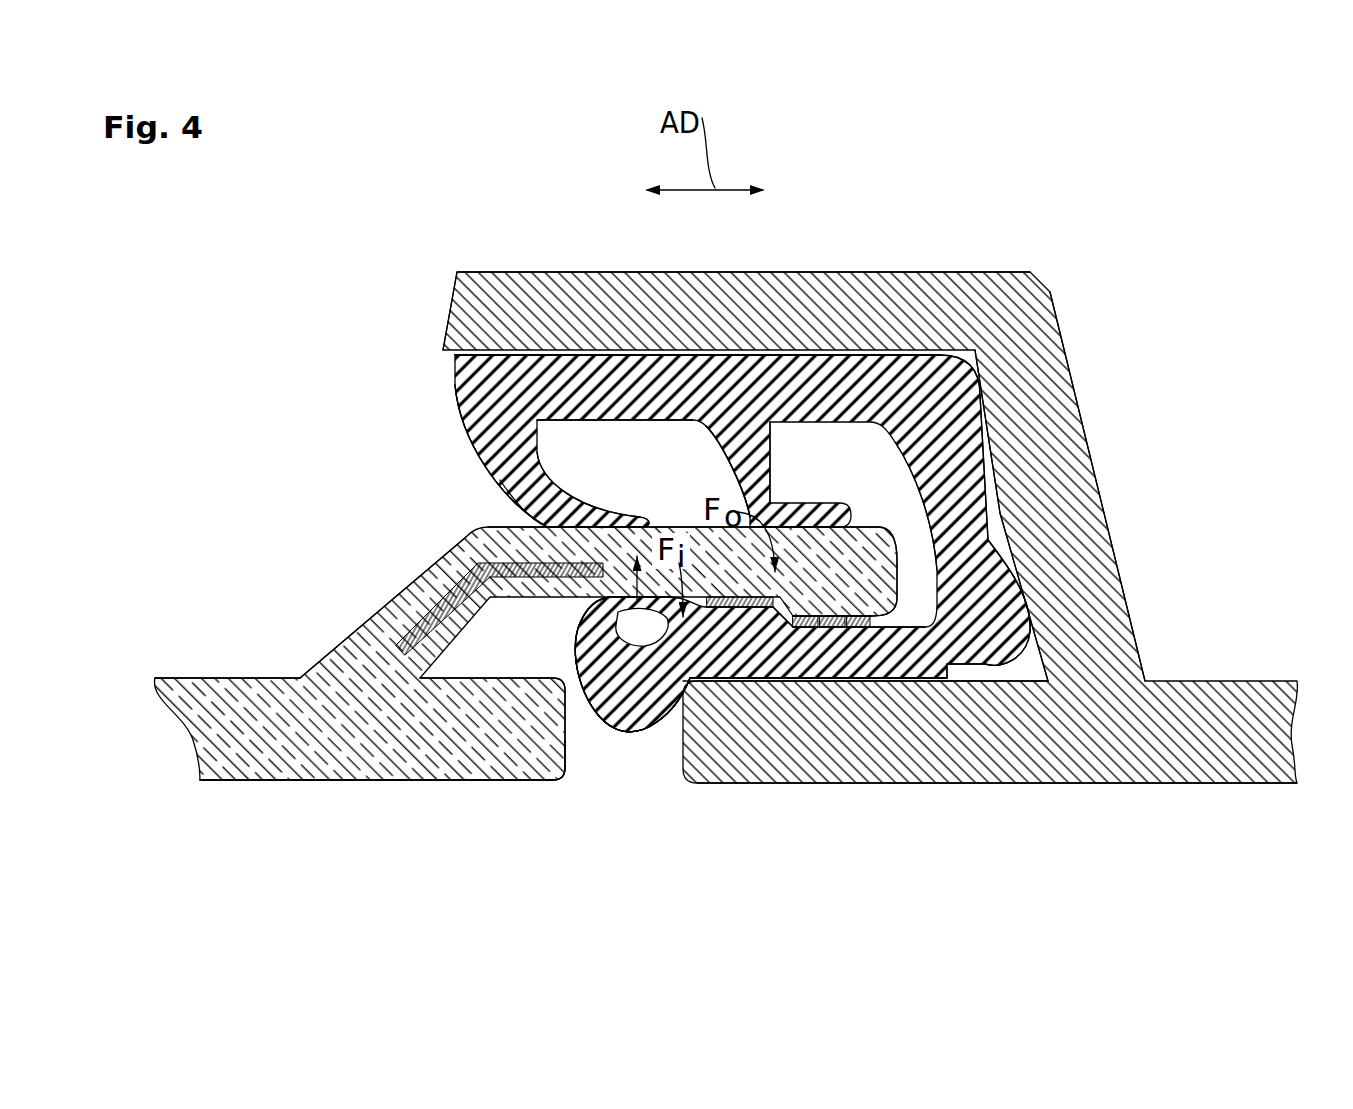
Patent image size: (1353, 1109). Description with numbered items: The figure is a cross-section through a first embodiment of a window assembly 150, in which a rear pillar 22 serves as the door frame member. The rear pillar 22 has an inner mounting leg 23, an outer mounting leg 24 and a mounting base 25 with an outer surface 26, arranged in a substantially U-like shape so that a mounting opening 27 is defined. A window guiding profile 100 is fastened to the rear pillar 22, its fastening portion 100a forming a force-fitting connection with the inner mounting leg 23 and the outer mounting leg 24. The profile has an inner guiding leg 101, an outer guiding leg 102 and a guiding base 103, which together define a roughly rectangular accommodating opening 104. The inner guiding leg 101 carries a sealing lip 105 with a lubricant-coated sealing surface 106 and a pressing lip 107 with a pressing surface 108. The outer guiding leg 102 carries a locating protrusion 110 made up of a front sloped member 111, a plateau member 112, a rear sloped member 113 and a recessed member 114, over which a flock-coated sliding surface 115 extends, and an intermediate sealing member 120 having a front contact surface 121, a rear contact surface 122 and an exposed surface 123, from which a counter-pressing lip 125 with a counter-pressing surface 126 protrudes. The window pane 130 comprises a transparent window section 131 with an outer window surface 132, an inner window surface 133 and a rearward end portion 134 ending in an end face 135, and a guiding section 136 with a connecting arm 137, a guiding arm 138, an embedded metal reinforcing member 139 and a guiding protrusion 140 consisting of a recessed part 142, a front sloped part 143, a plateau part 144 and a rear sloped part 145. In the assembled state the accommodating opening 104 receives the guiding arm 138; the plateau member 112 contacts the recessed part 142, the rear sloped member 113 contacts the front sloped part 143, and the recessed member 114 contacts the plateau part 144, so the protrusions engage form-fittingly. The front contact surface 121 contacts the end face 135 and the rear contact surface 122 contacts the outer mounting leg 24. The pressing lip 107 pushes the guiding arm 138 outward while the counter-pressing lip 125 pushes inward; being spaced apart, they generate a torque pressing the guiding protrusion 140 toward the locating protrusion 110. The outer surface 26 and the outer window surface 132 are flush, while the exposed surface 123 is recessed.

The rear pillar 22 is at (1177, 500).
The inner mounting leg 23 is at (942, 305).
The outer mounting leg 24 is at (1020, 784).
The mounting base 25 is at (1055, 383).
The outer surface 26 is at (1135, 784).
The mounting opening 27 is at (968, 365).
The window guiding profile 100 is at (470, 397).
The fastening portion 100a is at (790, 352).
The inner guiding leg 101 is at (625, 395).
The outer guiding leg 102 is at (843, 657).
The guiding base 103 is at (993, 505).
The accommodating opening 104 is at (440, 497).
The sealing lip 105 is at (494, 457).
The sealing surface 106 is at (500, 498).
The pressing lip 107 is at (742, 462).
The pressing surface 108 is at (750, 492).
The locating protrusion 110 is at (740, 630).
The front sloped member 111 is at (694, 528).
The plateau member 112 is at (730, 592).
The rear sloped member 113 is at (780, 635).
The recessed member 114 is at (840, 640).
The sliding surface 115 is at (915, 632).
The intermediate sealing member 120 is at (613, 728).
The front contact surface 121 is at (578, 692).
The rear contact surface 122 is at (660, 705).
The exposed surface 123 is at (640, 735).
The counter-pressing lip 125 is at (598, 610).
The counter-pressing surface 126 is at (580, 633).
The window pane 130 is at (209, 703).
The window section 131 is at (225, 787).
The outer window surface 132 is at (282, 788).
The inner window surface 133 is at (227, 672).
The end portion 134 is at (468, 733).
The end face 135 is at (570, 767).
The guiding section 136 is at (362, 615).
The connecting arm 137 is at (428, 580).
The guiding arm 138 is at (630, 517).
The reinforcing member 139 is at (466, 538).
The guiding protrusion 140 is at (827, 548).
The recessed part 142 is at (765, 602).
The front sloped part 143 is at (778, 600).
The plateau part 144 is at (840, 618).
The rear sloped part 145 is at (795, 600).
The window assembly 150 is at (365, 275).